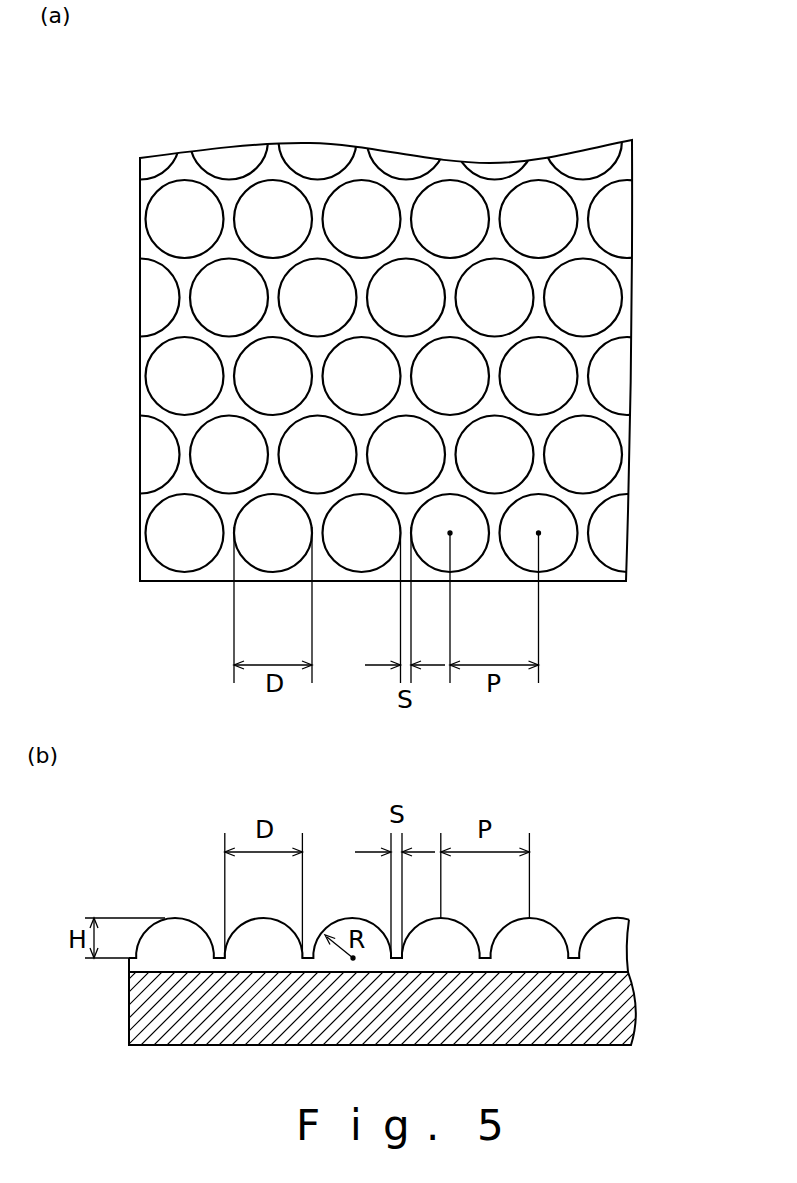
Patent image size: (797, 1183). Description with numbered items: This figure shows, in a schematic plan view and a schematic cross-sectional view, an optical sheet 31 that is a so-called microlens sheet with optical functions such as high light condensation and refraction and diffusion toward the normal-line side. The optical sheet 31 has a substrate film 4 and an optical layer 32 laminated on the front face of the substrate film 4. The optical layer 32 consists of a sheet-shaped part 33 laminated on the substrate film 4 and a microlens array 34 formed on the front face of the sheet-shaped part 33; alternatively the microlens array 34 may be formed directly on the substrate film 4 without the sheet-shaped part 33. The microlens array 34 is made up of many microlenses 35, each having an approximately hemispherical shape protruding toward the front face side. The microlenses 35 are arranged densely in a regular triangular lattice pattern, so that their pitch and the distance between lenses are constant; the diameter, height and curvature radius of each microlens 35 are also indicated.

The substrate film 4 is at (170, 582).
The optical sheet 31 is at (172, 130).
The optical layer 32 is at (630, 950).
The sheet-shaped part 33 is at (129, 963).
The microlens array 34 is at (583, 560).
The microlens 35 is at (566, 570).